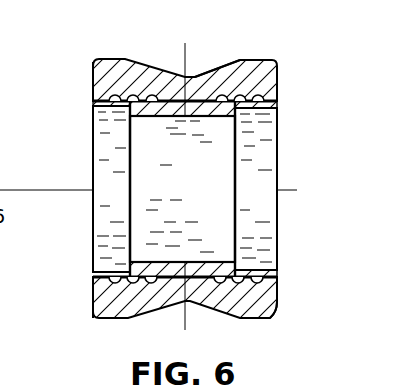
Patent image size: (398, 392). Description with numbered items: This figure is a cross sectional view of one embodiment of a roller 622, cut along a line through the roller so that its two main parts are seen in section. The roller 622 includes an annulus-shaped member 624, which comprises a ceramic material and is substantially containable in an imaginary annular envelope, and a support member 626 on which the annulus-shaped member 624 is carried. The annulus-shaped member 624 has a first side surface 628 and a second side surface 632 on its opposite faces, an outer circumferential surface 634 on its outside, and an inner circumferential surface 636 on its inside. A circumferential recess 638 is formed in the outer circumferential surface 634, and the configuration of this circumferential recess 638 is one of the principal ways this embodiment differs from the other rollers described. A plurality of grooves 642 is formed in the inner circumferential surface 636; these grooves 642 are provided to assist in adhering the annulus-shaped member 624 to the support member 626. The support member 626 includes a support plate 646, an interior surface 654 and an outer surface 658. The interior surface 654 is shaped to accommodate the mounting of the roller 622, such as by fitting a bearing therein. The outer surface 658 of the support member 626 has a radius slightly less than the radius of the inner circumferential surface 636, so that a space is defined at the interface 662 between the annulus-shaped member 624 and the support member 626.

The roller 622 is at (116, 42).
The annulus-shaped member 624 is at (276, 59).
The support member 626 is at (278, 103).
The first side surface 628 is at (93, 72).
The second side surface 632 is at (278, 78).
The outer circumferential surface 634 is at (267, 60).
The inner circumferential surface 636 is at (257, 110).
The circumferential recess 638 is at (210, 69).
The grooves 642 is at (238, 112).
The support plate 646 is at (115, 108).
The interior surface 654 is at (257, 268).
The outer surface 658 is at (273, 285).
The interface 662 is at (93, 283).